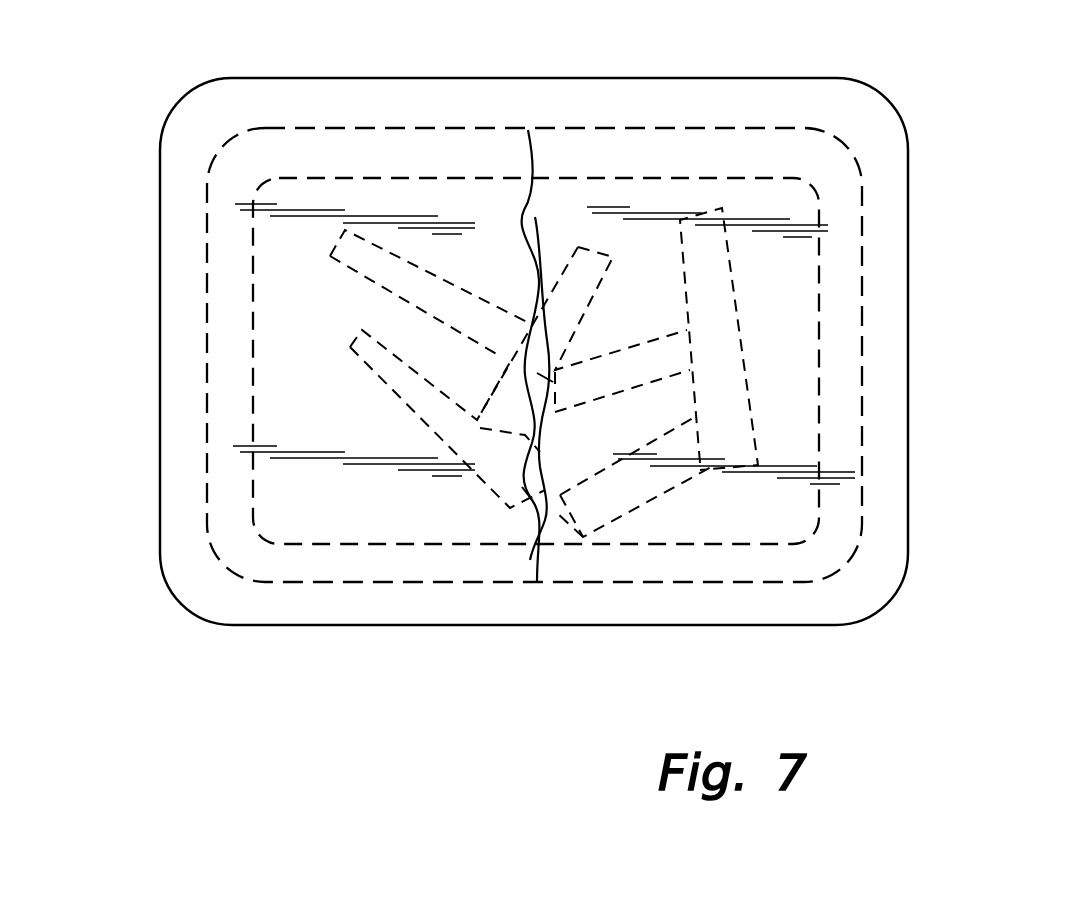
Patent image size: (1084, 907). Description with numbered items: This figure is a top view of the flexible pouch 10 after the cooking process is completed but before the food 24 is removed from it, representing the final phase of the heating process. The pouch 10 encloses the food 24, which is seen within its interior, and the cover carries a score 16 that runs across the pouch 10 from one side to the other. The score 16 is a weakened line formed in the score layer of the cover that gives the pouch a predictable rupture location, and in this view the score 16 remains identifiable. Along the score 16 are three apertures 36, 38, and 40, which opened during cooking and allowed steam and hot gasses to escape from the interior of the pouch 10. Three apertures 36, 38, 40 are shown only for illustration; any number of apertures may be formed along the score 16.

The flexible pouch 10 is at (156, 116).
The score 16 is at (530, 158).
The food item 24 is at (725, 347).
The aperture 36 is at (535, 217).
The aperture 38 is at (540, 374).
The aperture 40 is at (545, 482).